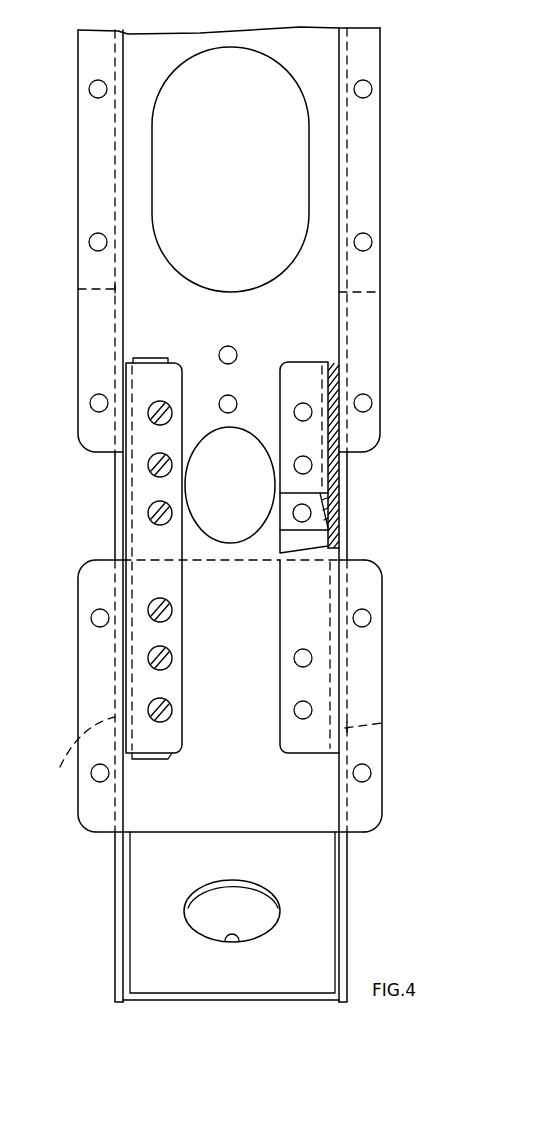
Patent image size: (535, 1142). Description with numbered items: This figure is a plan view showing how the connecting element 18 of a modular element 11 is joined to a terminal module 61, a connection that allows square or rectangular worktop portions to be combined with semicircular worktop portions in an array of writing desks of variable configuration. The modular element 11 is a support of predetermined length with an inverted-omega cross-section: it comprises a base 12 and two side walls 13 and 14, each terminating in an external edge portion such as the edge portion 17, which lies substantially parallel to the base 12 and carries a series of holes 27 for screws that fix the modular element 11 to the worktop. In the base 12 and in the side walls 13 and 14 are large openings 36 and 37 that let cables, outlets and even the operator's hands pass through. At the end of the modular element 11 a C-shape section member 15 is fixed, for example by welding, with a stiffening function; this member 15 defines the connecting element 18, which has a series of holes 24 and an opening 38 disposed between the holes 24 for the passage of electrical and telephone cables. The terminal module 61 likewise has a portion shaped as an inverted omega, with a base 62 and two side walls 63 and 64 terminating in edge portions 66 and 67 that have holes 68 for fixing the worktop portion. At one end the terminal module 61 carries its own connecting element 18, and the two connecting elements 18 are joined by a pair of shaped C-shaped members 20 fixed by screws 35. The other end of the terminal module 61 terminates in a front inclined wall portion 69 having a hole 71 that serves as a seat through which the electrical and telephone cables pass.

The modular element 11 is at (393, 49).
The base 12 is at (292, 40).
The side wall 13 is at (82, 291).
The side wall 14 is at (380, 292).
The C-shape section member 15 is at (175, 738).
The edge portion 17 is at (372, 155).
The connecting element 18 is at (198, 582).
The C-shaped member 20 is at (150, 357).
The holes 24 is at (296, 464).
The holes 27 is at (372, 242).
The screws 35 is at (170, 658).
The opening 36 is at (182, 66).
The opening 37 is at (345, 99).
The opening 38 is at (202, 442).
The terminal module 61 is at (390, 550).
The base 62 is at (325, 803).
The side wall 63 is at (382, 723).
The side wall 64 is at (83, 755).
The edge portion 66 is at (372, 680).
The edge portion 67 is at (88, 670).
The holes 68 is at (366, 617).
The front inclined wall portion 69 is at (147, 942).
The hole 71 is at (240, 945).